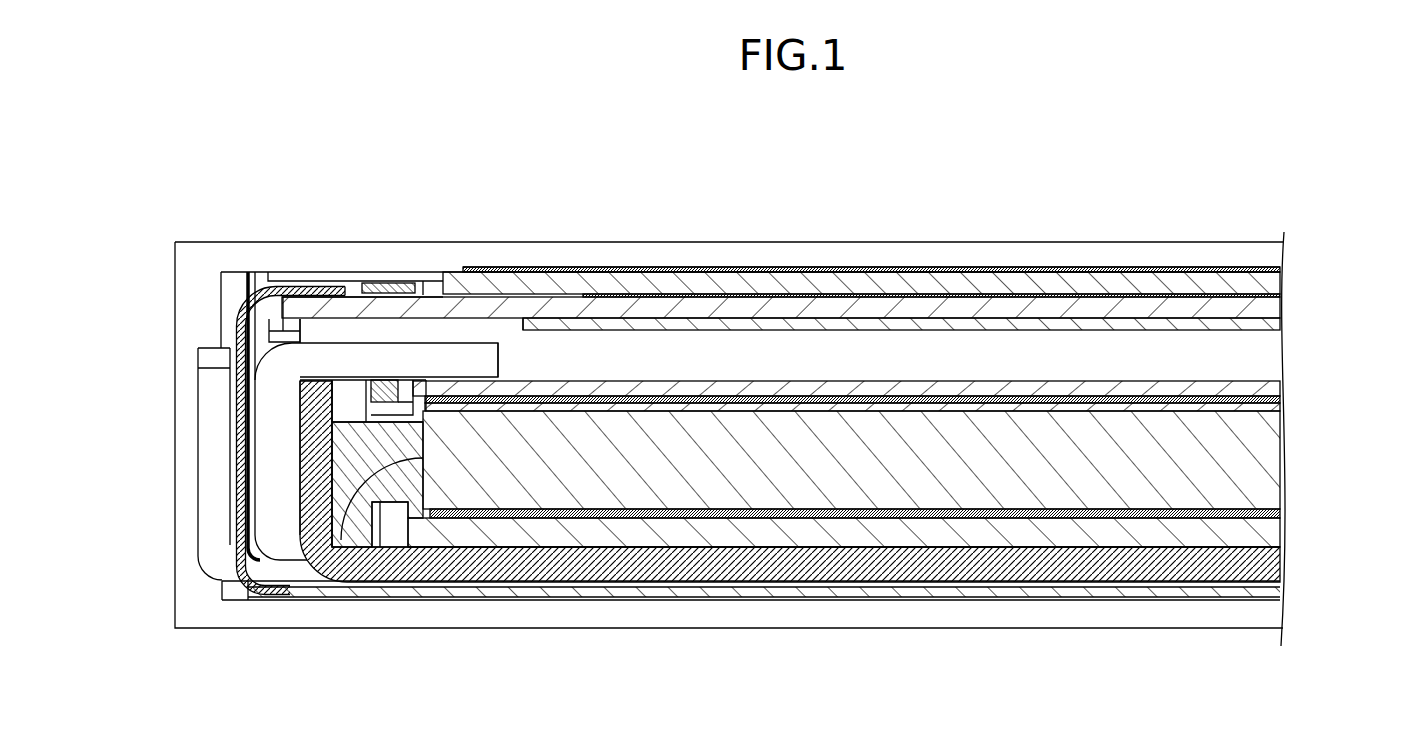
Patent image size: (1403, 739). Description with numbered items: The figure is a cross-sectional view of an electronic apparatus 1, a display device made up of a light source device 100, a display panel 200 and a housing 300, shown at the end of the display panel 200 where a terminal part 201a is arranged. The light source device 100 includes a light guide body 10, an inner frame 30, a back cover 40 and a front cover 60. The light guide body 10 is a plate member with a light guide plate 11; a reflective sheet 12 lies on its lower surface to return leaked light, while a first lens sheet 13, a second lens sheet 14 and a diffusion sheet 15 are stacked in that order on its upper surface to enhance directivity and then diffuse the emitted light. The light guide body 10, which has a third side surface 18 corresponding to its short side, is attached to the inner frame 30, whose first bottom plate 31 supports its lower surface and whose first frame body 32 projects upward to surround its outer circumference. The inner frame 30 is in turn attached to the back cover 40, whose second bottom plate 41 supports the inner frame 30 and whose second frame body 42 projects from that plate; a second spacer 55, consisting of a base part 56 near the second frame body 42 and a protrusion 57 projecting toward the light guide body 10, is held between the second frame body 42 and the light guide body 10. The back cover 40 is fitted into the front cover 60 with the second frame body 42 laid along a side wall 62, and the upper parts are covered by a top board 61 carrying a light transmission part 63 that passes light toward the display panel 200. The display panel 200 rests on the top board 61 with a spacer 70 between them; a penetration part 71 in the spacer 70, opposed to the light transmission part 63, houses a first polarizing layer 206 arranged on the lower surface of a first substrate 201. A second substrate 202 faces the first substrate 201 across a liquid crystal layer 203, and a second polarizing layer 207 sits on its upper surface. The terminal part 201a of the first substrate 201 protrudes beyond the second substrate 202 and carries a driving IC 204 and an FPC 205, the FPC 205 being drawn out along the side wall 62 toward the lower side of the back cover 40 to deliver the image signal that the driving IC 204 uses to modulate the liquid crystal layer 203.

The electronic apparatus 1 is at (1330, 224).
The light guide body 10 is at (905, 444).
The light guide plate 11 is at (1277, 460).
The reflective sheet 12 is at (885, 514).
The first lens sheet 13 is at (1284, 410).
The second lens sheet 14 is at (1284, 400).
The diffusion sheet 15 is at (1284, 386).
The third side surface 18 is at (322, 568).
The inner frame 30 is at (676, 530).
The first bottom plate 31 is at (717, 535).
The first frame body 32 is at (383, 402).
The back cover 40 is at (676, 530).
The second bottom plate 41 is at (556, 571).
The second frame body 42 is at (316, 466).
The second spacer 55 is at (385, 573).
The base part 56 is at (355, 538).
The protrusion 57 is at (397, 488).
The front cover 60 is at (285, 377).
The top board 61 is at (300, 362).
The side wall 62 is at (270, 513).
The light transmission part 63 is at (500, 360).
The spacer 70 is at (356, 330).
The penetration part 71 is at (484, 328).
The light source device 100 is at (956, 603).
The display panel 200 is at (731, 380).
The first substrate 201 is at (1276, 308).
The terminal part 201a is at (427, 297).
The second substrate 202 is at (1283, 270).
The liquid crystal layer 203 is at (1283, 290).
The driving IC 204 is at (385, 283).
The FPC 205 is at (240, 313).
The first polarizing layer 206 is at (943, 326).
The second polarizing layer 207 is at (826, 270).
The housing 300 is at (596, 257).